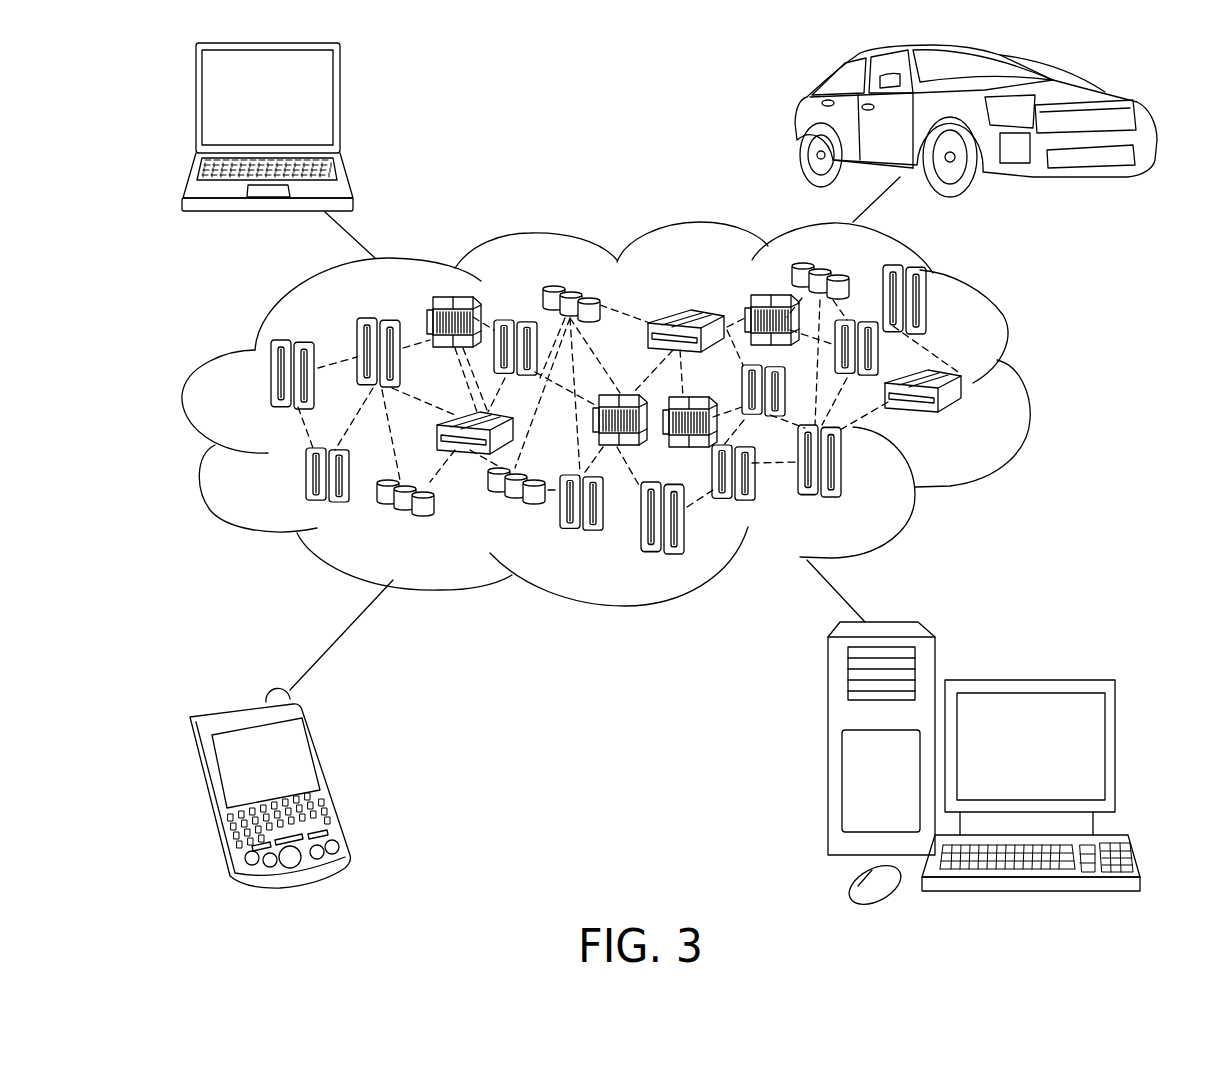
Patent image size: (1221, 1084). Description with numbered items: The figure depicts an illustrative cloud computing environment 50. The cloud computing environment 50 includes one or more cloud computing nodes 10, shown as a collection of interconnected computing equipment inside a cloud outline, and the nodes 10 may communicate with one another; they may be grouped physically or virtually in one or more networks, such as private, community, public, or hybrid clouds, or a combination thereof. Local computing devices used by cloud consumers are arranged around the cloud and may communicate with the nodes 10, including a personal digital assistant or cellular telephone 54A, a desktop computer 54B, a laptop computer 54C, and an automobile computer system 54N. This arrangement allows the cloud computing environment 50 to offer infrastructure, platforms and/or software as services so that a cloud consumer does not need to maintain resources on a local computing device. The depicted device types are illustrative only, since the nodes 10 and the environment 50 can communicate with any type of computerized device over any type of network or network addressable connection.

The cloud computing node 10 is at (975, 419).
The cloud computing environment 50 is at (1027, 384).
The personal digital assistant or cellular telephone 54A is at (333, 778).
The desktop computer 54B is at (1028, 682).
The laptop computer 54C is at (343, 107).
The automobile computer system 54N is at (800, 128).